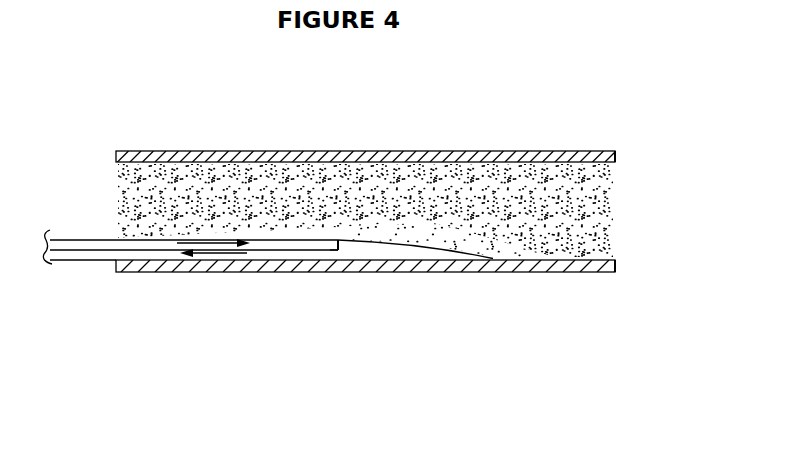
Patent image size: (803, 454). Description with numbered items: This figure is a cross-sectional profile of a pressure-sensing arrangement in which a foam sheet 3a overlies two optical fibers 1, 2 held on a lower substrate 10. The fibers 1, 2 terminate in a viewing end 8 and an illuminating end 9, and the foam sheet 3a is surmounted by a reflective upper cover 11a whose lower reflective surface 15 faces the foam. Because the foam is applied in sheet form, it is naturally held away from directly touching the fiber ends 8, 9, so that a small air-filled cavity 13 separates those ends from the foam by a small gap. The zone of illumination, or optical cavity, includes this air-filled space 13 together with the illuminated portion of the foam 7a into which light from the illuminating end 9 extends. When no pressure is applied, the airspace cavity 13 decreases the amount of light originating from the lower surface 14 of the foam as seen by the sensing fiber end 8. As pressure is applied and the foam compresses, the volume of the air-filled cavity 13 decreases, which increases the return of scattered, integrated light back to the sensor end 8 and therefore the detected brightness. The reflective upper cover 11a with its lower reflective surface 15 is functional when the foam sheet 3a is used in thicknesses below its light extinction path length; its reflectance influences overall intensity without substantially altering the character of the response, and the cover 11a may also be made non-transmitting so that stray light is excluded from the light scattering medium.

The optical fiber 1 is at (110, 247).
The optical fiber 2 is at (115, 253).
The foam sheet 3a is at (597, 220).
The illuminated portion of the foam 7a is at (367, 227).
The viewing end 8 is at (340, 243).
The illuminating end 9 is at (333, 255).
The lower substrate 10 is at (605, 270).
The reflective upper cover 11a is at (272, 152).
The air-filled cavity 13 is at (405, 253).
The lower surface of the foam 14 is at (492, 258).
The lower reflective surface 15 is at (603, 159).